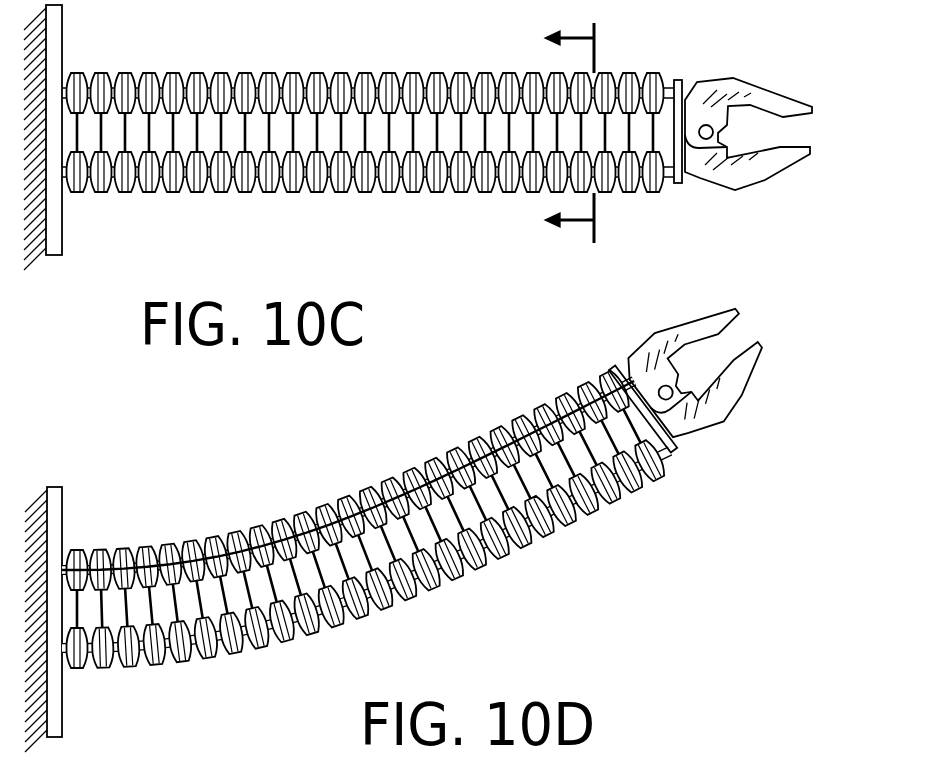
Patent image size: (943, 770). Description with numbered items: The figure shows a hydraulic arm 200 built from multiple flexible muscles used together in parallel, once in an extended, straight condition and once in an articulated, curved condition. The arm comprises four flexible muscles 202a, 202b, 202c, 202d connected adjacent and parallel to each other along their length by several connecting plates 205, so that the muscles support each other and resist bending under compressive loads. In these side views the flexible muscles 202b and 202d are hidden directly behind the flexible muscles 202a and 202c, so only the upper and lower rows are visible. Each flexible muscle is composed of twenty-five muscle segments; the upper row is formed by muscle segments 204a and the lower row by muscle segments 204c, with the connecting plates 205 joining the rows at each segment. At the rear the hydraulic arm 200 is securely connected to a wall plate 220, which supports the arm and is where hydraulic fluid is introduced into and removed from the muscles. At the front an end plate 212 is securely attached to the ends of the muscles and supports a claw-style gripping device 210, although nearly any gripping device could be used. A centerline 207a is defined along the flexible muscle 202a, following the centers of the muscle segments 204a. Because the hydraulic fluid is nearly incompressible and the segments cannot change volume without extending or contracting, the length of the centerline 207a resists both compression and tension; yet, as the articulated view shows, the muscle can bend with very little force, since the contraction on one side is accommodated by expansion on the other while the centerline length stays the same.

In FIG. 10C, the hydraulic arm 200 is at (478, 250).
In FIG. 10D, the hydraulic arm 200 is at (546, 608).
In FIG. 10C, the flexible muscle 202a is at (359, 74).
In FIG. 10D, the flexible muscle 202a is at (355, 496).
In FIG. 10D, the flexible muscle 202b is at (348, 479).
In FIG. 10C, the flexible muscle 202c is at (359, 194).
In FIG. 10D, the flexible muscle 202c is at (356, 632).
In FIG. 10D, the flexible muscle 202d is at (366, 553).
In FIG. 10C, the muscle segments 204a is at (461, 75).
In FIG. 10C, the muscle segments 204c is at (461, 192).
In FIG. 10C, the connecting plates 205 is at (317, 130).
In FIG. 10D, the connecting plates 205 is at (363, 519).
In FIG. 10D, the centerline 207a is at (470, 465).
In FIG. 10C, the gripping device 210 is at (770, 88).
In FIG. 10D, the gripping device 210 is at (762, 342).
In FIG. 10C, the end plate 212 is at (678, 185).
In FIG. 10D, the end plate 212 is at (675, 447).
In FIG. 10C, the wall plate 220 is at (62, 43).
In FIG. 10D, the wall plate 220 is at (63, 523).